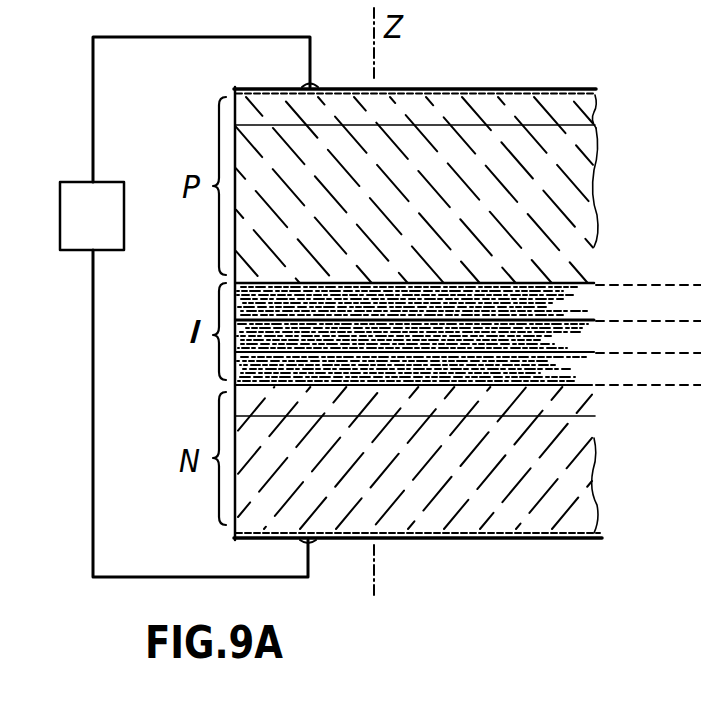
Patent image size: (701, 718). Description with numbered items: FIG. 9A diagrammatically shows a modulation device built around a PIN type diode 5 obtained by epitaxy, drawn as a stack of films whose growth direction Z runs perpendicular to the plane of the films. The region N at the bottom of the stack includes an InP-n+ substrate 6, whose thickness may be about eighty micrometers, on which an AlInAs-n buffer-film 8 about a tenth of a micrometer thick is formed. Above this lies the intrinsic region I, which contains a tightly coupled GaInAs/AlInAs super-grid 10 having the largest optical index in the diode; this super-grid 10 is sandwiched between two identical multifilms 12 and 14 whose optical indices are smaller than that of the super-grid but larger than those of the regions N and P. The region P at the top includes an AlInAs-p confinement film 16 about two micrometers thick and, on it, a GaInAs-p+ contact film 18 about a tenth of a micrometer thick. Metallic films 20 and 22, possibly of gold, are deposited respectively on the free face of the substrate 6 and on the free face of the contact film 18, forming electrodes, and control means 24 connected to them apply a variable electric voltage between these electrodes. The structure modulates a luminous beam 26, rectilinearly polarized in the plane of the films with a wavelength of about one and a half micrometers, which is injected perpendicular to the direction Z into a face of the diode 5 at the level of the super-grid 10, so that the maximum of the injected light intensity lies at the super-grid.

The PIN type diode 5 is at (194, 104).
The InP-n+ substrate 6 is at (573, 482).
The AlInAs-n buffer-film 8 is at (563, 403).
The super-grid 10 is at (543, 340).
The multifilm 12 is at (545, 372).
The multifilm 14 is at (547, 302).
The AlInAs-p confinement film 16 is at (563, 186).
The GaInAs-p+ contact film 18 is at (566, 113).
The metallic film 20 is at (457, 541).
The metallic film 22 is at (405, 89).
The control means 24 is at (92, 216).
The luminous beam 26 is at (162, 335).